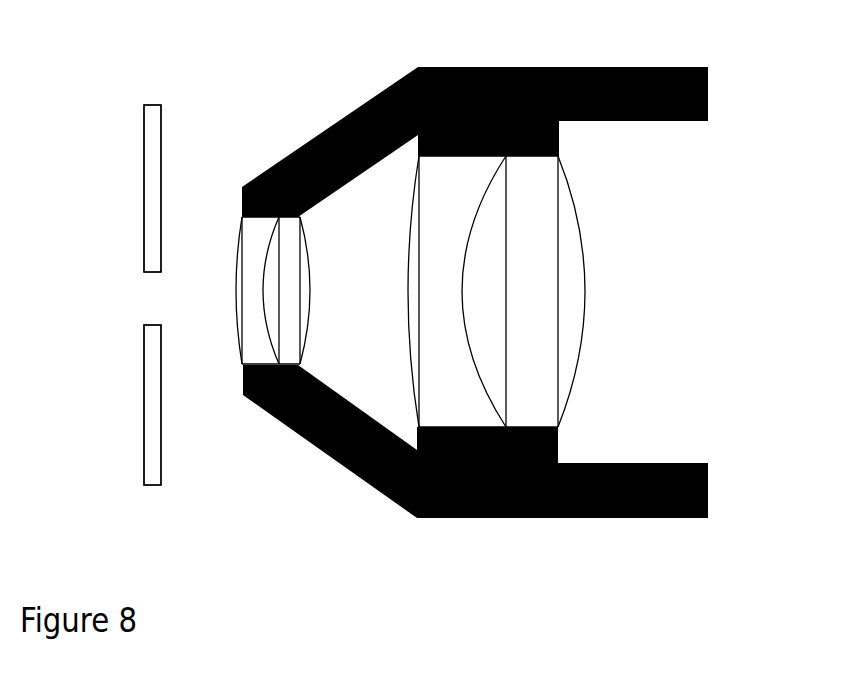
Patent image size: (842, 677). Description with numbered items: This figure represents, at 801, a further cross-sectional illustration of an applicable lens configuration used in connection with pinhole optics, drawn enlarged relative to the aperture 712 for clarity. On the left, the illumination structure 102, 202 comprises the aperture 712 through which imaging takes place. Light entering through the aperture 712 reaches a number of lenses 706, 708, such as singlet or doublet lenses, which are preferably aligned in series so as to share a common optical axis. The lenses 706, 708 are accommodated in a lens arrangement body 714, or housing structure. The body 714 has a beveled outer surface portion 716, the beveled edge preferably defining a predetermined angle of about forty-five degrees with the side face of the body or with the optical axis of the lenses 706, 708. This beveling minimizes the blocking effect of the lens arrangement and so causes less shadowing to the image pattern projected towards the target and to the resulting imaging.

The cross-sectional illustration of lens configuration 801 is at (118, 36).
The illumination structure 102 is at (122, 292).
The illumination structure 202 is at (122, 295).
The aperture 712 is at (137, 305).
The beveled outer surface portion 716 is at (200, 22).
The lens 706 is at (301, 290).
The lens 708 is at (527, 291).
The lens arrangement body 714 is at (590, 292).